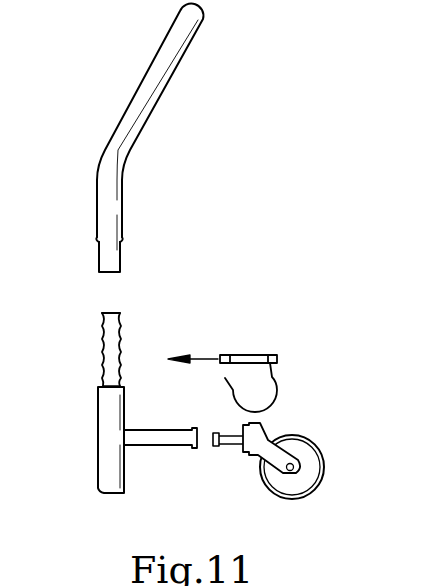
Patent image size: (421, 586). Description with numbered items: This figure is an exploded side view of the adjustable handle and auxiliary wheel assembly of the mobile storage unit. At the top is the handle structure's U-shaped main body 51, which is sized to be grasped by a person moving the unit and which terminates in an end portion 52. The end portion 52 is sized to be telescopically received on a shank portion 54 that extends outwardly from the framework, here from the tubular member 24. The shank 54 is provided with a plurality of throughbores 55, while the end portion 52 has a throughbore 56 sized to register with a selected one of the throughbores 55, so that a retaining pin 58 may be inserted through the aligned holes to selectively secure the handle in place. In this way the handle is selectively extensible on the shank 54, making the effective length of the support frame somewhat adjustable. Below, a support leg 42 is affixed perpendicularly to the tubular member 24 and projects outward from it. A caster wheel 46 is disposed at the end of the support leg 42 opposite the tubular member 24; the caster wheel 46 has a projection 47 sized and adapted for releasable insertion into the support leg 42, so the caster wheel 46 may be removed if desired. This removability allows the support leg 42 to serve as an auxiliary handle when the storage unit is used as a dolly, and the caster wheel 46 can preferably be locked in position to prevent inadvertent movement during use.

The U-shaped main body 51 is at (152, 123).
The throughbore 56 is at (120, 240).
The end portion 52 is at (112, 262).
The throughbores 55 is at (102, 342).
The shank portion 54 is at (110, 368).
The tubular member 24 is at (110, 457).
The support leg 42 is at (133, 437).
The retaining pin 58 is at (242, 357).
The projection 47 is at (236, 456).
The caster wheel 46 is at (298, 447).